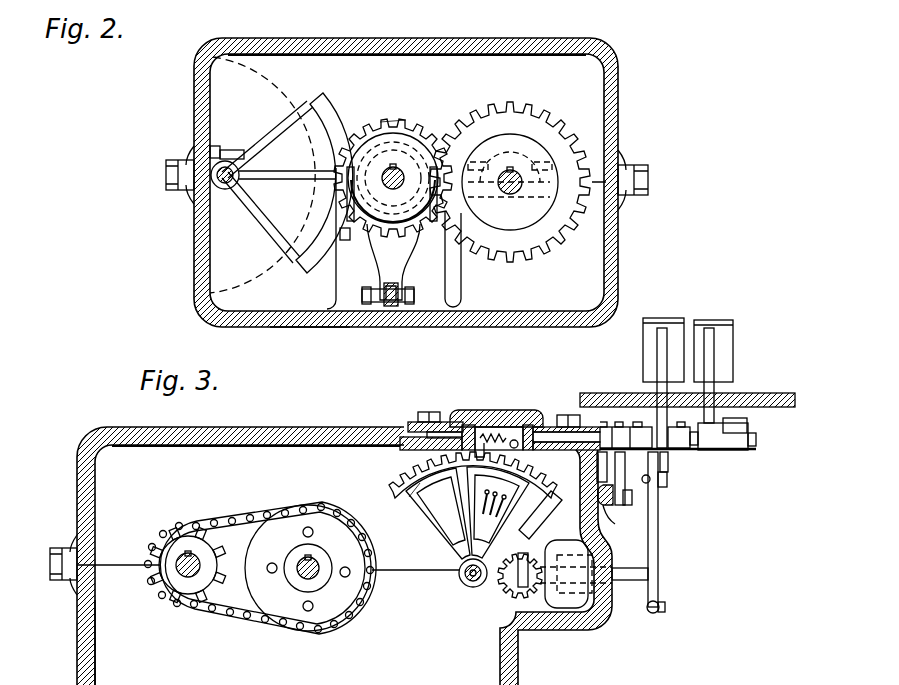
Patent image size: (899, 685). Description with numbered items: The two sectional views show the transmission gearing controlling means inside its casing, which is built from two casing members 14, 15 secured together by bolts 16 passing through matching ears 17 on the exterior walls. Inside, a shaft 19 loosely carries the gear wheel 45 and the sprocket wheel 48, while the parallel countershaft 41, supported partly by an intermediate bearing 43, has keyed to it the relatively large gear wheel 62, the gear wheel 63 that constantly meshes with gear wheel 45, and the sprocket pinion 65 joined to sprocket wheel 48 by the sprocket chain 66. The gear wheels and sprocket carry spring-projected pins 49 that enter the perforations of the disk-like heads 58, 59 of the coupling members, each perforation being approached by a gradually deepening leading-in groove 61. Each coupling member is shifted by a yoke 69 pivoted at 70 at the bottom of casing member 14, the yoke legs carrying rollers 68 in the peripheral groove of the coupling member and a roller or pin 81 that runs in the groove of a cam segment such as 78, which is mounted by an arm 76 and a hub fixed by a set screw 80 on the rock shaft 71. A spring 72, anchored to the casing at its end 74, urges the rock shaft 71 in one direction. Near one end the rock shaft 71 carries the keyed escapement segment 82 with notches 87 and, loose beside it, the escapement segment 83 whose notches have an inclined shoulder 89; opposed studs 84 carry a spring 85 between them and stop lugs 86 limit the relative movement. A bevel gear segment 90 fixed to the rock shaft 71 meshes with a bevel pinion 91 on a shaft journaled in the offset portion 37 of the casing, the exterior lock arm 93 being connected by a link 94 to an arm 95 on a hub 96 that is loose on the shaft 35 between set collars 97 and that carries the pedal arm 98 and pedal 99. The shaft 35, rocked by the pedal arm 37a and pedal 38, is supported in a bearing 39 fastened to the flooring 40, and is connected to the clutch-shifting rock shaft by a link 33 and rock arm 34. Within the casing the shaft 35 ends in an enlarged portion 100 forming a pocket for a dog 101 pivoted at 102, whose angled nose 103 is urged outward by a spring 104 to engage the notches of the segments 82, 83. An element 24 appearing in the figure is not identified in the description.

In FIG. 2, the casing member 14 is at (305, 326).
In FIG. 3, the casing member 14 is at (155, 642).
In FIG. 2, the casing member 15 is at (483, 39).
In FIG. 3, the casing member 15 is at (243, 431).
In FIG. 2, the bolts 16 is at (179, 160).
In FIG. 3, the bolts 16 is at (63, 548).
In FIG. 2, the ears 17 is at (165, 176).
In FIG. 3, the ears 17 is at (50, 575).
In FIG. 2, the shaft 19 is at (448, 240).
In FIG. 3, the shaft 19 is at (304, 575).
In FIG. 2, the plate 24 is at (335, 272).
In FIG. 3, the link 33 is at (613, 507).
In FIG. 3, the rock arm 34 is at (623, 480).
In FIG. 3, the shaft 35 is at (757, 448).
In FIG. 3, the offset portion of casing 37 is at (598, 556).
In FIG. 3, the pedal arm 37a is at (714, 359).
In FIG. 3, the pedal 38 is at (733, 341).
In FIG. 3, the bearing 39 is at (749, 441).
In FIG. 3, the flooring 40 is at (768, 396).
In FIG. 2, the countershaft 41 is at (510, 195).
In FIG. 3, the countershaft 41 is at (176, 568).
In FIG. 2, the intermediate bearing 43 is at (510, 168).
In FIG. 2, the gear wheel 45 is at (356, 130).
In FIG. 3, the sprocket wheel 48 is at (310, 620).
In FIG. 3, the pins 49 is at (291, 540).
In FIG. 2, the disk-like head 58 is at (418, 121).
In FIG. 2, the disk-like head 59 is at (400, 190).
In FIG. 2, the leading-in grooves 61 is at (345, 241).
In FIG. 2, the gear wheel 62 is at (547, 108).
In FIG. 2, the gear wheel 63 is at (506, 134).
In FIG. 3, the sprocket wheel or pinion 65 is at (172, 586).
In FIG. 3, the sprocket chain 66 is at (243, 509).
In FIG. 2, the rollers 68 is at (388, 128).
In FIG. 2, the yoke 69 is at (380, 266).
In FIG. 2, the pivot 70 is at (388, 306).
In FIG. 2, the rock shaft 71 is at (225, 189).
In FIG. 3, the rock shaft 71 is at (466, 583).
In FIG. 2, the spring 72 is at (238, 150).
In FIG. 2, the spring end 74 is at (217, 146).
In FIG. 2, the arms 76 is at (283, 128).
In FIG. 2, the cam segment 78 is at (318, 101).
In FIG. 2, the set screw 80 is at (262, 165).
In FIG. 2, the roller 81 is at (342, 178).
In FIG. 3, the escapement segment 82 is at (455, 525).
In FIG. 3, the escapement segment 83 is at (434, 520).
In FIG. 3, the studs 84 is at (493, 507).
In FIG. 3, the spring 85 is at (543, 510).
In FIG. 3, the stop lugs 86 is at (425, 500).
In FIG. 3, the notches 87 is at (402, 489).
In FIG. 3, the inclined shoulder 89 is at (428, 461).
In FIG. 3, the gear segment 90 is at (462, 586).
In FIG. 3, the bevel pinion 91 is at (520, 583).
In FIG. 3, the lock arm 93 is at (652, 614).
In FIG. 3, the link 94 is at (659, 529).
In FIG. 3, the arm 95 is at (668, 490).
In FIG. 3, the hub 96 is at (667, 452).
In FIG. 3, the set collars 97 is at (640, 426).
In FIG. 3, the pedal arm 98 is at (657, 346).
In FIG. 3, the pedal 99 is at (660, 318).
In FIG. 3, the enlarged portion 100 is at (478, 410).
In FIG. 3, the dog 101 is at (515, 427).
In FIG. 3, the pivot 102 is at (537, 428).
In FIG. 3, the nose 103 is at (488, 425).
In FIG. 3, the spring 104 is at (503, 445).